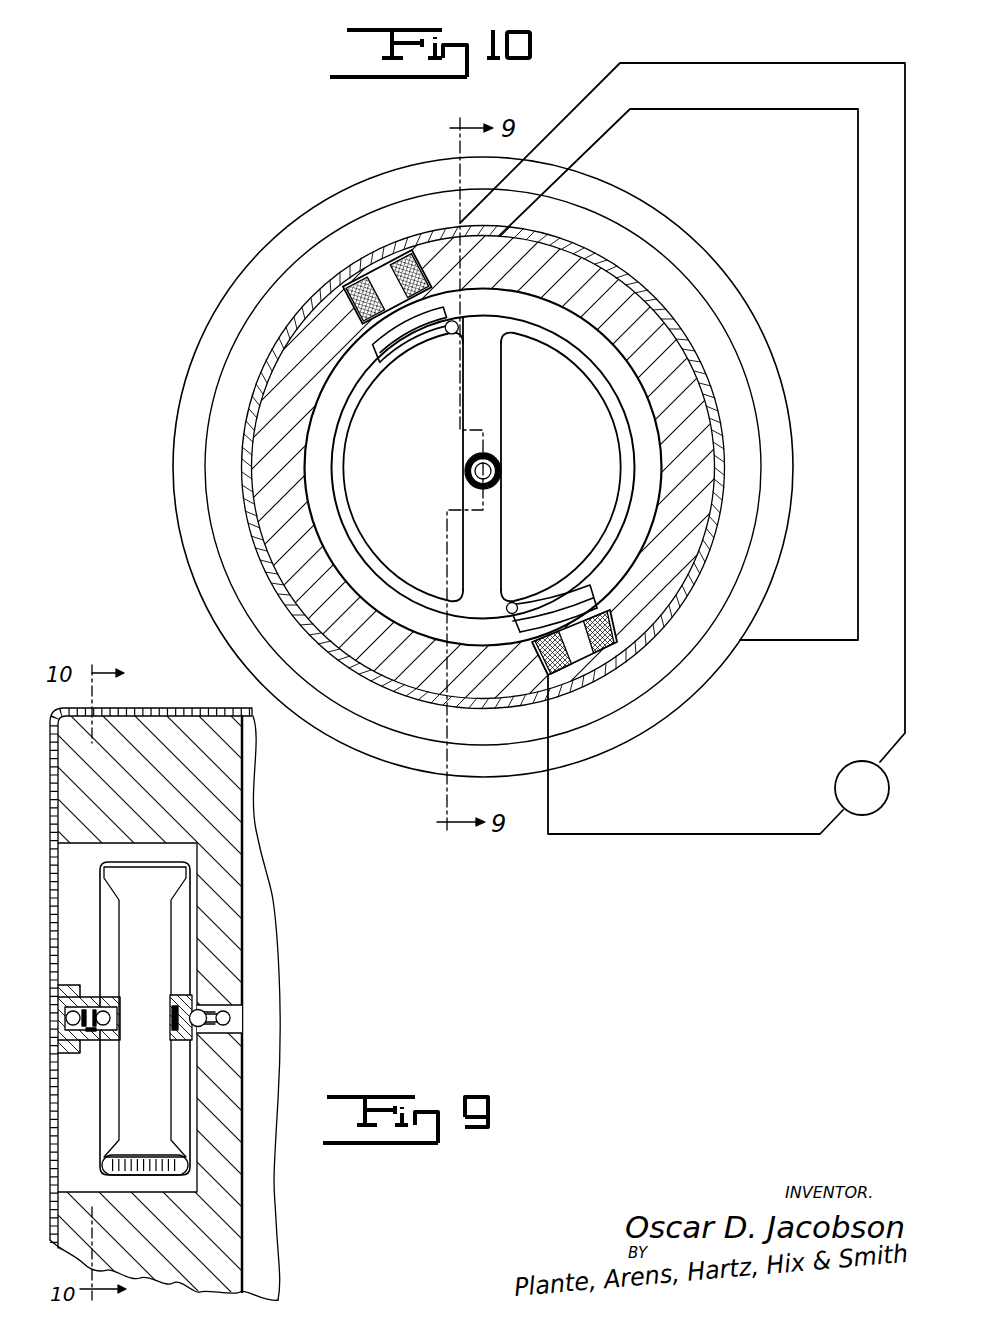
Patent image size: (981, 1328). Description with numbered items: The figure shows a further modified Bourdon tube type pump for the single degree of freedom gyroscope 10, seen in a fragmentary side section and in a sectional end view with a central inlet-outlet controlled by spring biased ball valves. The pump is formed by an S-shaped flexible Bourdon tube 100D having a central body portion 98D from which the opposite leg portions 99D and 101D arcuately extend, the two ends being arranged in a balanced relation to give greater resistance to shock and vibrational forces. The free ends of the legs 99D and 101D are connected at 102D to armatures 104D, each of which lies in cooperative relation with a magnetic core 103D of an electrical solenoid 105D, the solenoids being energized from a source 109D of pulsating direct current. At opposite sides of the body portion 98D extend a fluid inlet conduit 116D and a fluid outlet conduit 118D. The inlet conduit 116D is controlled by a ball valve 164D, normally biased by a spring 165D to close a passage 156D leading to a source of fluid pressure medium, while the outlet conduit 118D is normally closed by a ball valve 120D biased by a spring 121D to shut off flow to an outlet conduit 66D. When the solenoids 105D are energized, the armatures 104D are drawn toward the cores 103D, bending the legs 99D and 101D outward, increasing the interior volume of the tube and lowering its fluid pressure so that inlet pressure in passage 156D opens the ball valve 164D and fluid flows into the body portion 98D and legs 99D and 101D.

In FIG. 10, the single degree of freedom gyroscope 10 is at (682, 448).
In FIG. 10, the body portion 98D is at (522, 454).
In FIG. 9, the body portion 98D is at (227, 1012).
In FIG. 10, the leg portion 99D is at (340, 504).
In FIG. 10, the Bourdon tube 100D is at (555, 323).
In FIG. 10, the leg portion 101D is at (561, 467).
In FIG. 10, the connection 102D is at (487, 474).
In FIG. 10, the magnetic core 103D is at (385, 280).
In FIG. 10, the armature 104D is at (604, 468).
In FIG. 10, the electrical solenoid 105D is at (343, 300).
In FIG. 10, the mounting lug 109D is at (817, 783).
In FIG. 10, the ball valve 120D is at (535, 479).
In FIG. 9, the ball valve 120D is at (124, 1031).
In FIG. 9, the outlet conduit 66D is at (90, 1019).
In FIG. 9, the fluid inlet conduit 116D is at (257, 994).
In FIG. 9, the fluid outlet conduit 118D is at (114, 1002).
In FIG. 9, the spring 121D is at (109, 1041).
In FIG. 9, the passage 156D is at (290, 1025).
In FIG. 9, the ball valve 164D is at (273, 1037).
In FIG. 9, the spring 165D is at (280, 993).